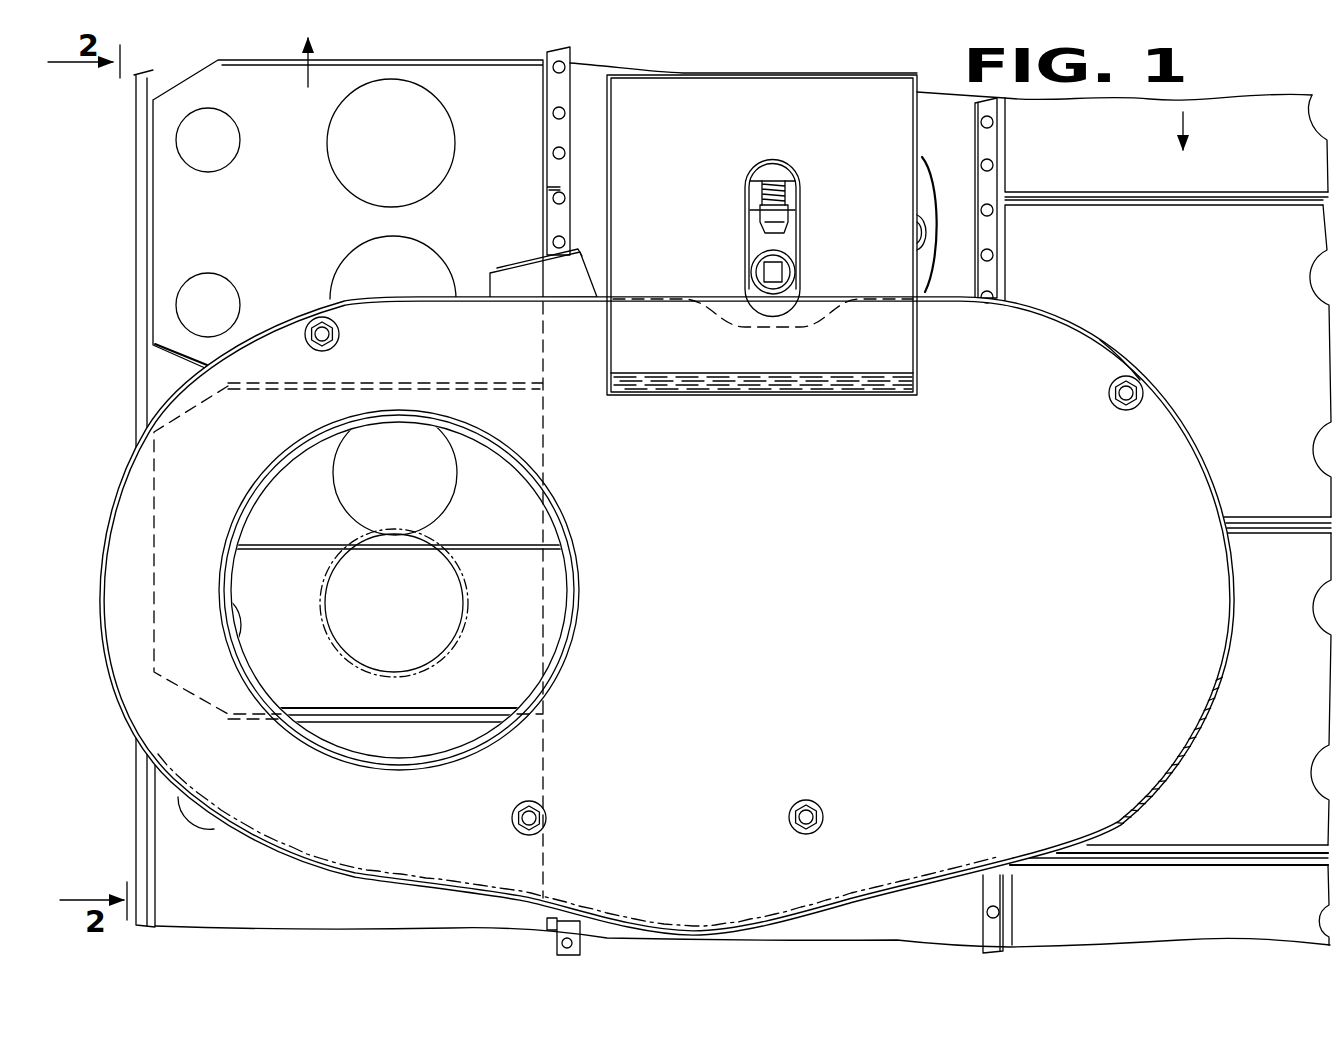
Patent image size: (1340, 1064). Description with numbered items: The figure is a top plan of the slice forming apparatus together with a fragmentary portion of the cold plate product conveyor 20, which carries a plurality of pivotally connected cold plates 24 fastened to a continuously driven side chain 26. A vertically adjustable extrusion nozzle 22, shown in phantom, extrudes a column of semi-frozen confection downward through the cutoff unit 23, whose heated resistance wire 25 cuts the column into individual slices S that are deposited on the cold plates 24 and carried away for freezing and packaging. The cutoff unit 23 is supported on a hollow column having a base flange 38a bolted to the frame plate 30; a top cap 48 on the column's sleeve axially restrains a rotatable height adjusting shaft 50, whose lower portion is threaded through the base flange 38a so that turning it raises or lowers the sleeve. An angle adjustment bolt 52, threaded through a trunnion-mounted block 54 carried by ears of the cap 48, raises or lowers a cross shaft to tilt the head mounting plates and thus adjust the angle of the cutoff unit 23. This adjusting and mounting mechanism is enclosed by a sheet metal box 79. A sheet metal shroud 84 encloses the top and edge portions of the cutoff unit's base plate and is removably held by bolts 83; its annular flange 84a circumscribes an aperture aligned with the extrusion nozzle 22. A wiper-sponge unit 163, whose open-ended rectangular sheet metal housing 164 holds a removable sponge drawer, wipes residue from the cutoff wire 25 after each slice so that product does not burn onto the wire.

The cold plate product conveyor 20 is at (157, 137).
The cold plates 24 is at (226, 231).
The slices S is at (398, 115).
The side chain 26 is at (547, 144).
The frame plate 30 is at (591, 72).
The wiper-sponge unit 163 is at (594, 258).
The sheet metal housing 164 is at (585, 284).
The base flange 38a is at (927, 183).
The sheet metal shroud 84 is at (685, 618).
The annular flange 84a is at (571, 598).
The heated resistance wire 25 is at (284, 546).
The extrusion nozzle 22 is at (456, 662).
The sheet metal box 79 is at (680, 121).
The top cap 48 is at (795, 240).
The block 54 is at (789, 189).
The angle adjustment bolt 52 is at (789, 202).
The height adjusting shaft 50 is at (790, 272).
The cutoff unit 23 is at (1141, 362).
The bolts 83 is at (320, 326).